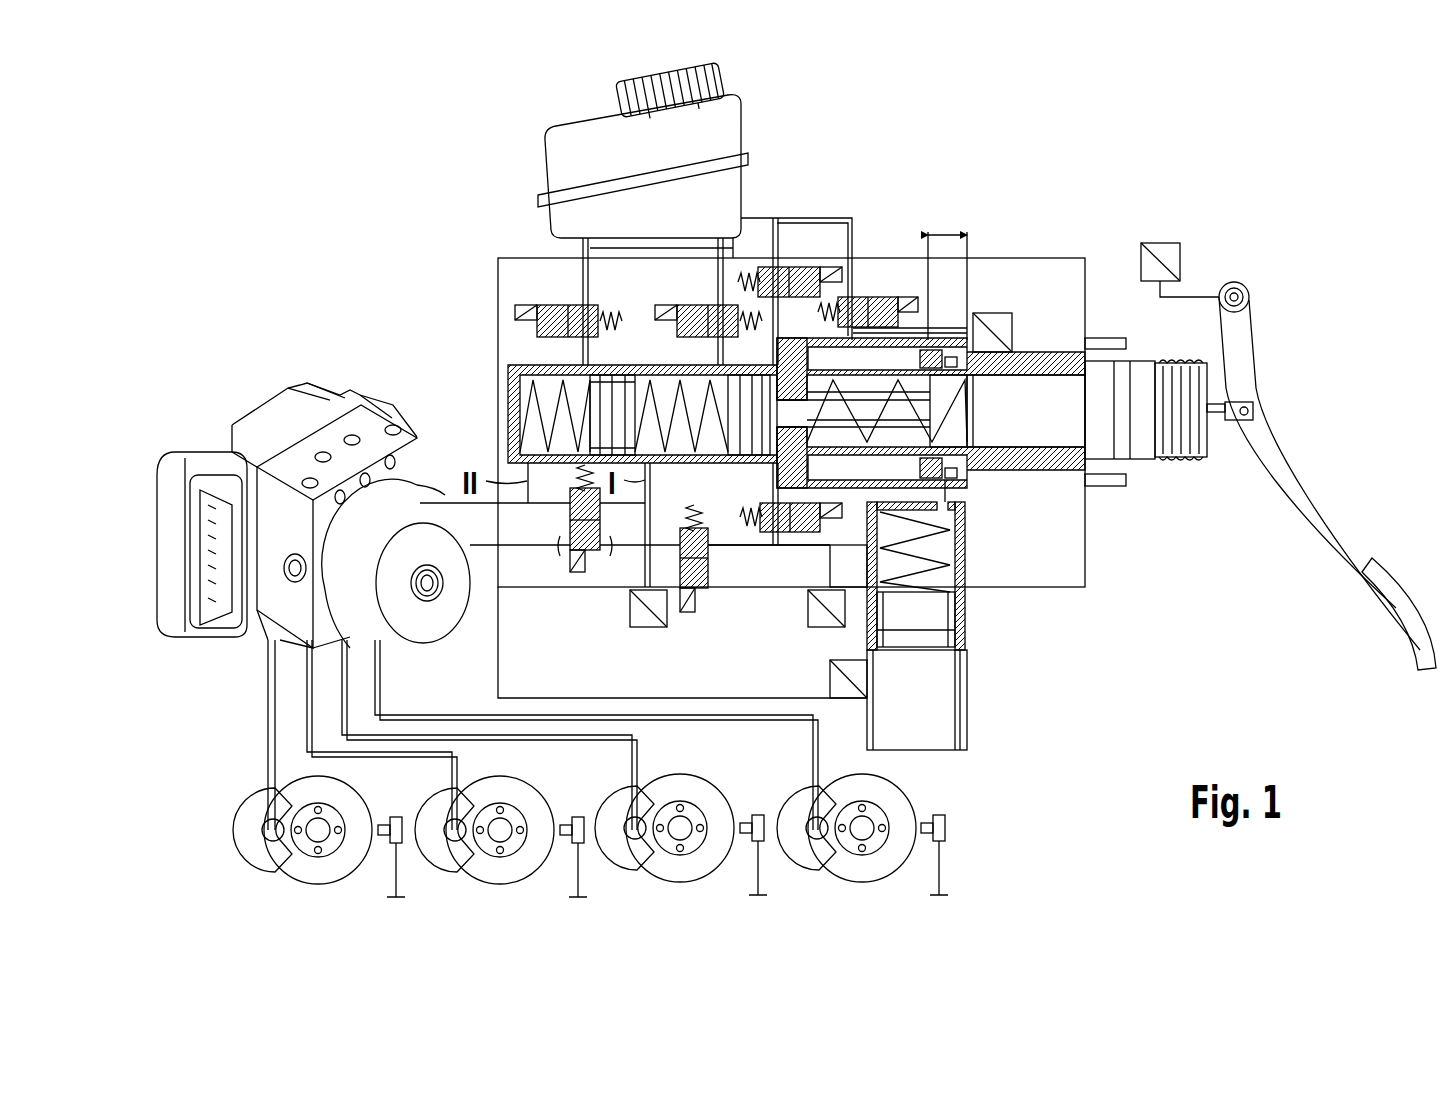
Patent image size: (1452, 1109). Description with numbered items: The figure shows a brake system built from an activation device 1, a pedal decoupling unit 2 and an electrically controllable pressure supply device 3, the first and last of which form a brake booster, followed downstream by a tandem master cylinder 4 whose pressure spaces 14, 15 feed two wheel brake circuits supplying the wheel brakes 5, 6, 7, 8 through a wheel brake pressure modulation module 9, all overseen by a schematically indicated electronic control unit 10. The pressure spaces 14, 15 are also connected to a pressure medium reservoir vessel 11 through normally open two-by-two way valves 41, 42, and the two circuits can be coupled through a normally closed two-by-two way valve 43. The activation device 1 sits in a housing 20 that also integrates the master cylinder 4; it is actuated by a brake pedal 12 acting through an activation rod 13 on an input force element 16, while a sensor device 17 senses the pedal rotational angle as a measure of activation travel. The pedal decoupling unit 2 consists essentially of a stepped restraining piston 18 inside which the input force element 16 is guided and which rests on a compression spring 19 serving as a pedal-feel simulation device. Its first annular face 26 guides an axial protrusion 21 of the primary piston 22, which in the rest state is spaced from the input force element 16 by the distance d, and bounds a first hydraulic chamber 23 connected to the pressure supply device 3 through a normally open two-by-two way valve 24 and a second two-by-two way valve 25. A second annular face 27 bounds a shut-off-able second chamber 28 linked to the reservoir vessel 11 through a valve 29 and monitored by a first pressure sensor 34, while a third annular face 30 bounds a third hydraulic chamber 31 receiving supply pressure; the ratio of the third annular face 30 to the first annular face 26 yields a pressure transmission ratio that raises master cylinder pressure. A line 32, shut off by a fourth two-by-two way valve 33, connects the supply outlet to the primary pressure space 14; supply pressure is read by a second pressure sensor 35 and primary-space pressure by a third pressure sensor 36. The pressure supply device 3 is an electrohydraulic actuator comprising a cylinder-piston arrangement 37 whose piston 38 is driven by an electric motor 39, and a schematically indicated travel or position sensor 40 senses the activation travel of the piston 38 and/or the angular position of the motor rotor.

The activation device 1 is at (1169, 478).
The pedal decoupling unit 2 is at (894, 388).
The electrically controllable pressure supply device 3 is at (982, 626).
The tandem master cylinder 4 is at (603, 414).
The wheel brake 5 is at (275, 853).
The wheel brake 6 is at (457, 853).
The wheel brake 7 is at (637, 848).
The wheel brake 8 is at (818, 848).
The wheel brake pressure modulation module 9 is at (255, 398).
The electronic open-loop and closed-loop control unit 10 is at (497, 680).
The pressure medium reservoir vessel 11 is at (560, 158).
The brake pedal 12 is at (1290, 470).
The activation rod 13 is at (1216, 415).
The primary pressure space 14 is at (676, 385).
The pressure space 15 is at (540, 365).
The input force element 16 is at (1040, 450).
The sensor device 17 is at (1160, 243).
The restraining piston 18 is at (1060, 350).
The compression spring 19 is at (985, 450).
The housing 20 is at (1085, 575).
The axial protrusion 21 is at (935, 410).
The primary piston 22 is at (745, 463).
The first hydraulic chamber 23 is at (790, 355).
The 2/2 way valve 24 is at (798, 268).
The second 2/2 way valve 25 is at (797, 535).
The first annular face 26 is at (775, 465).
The second annular face 27 is at (905, 298).
The second chamber 28 is at (848, 566).
The 2/2 way valve 29 is at (892, 270).
The third annular face 30 is at (962, 450).
The third hydraulic chamber 31 is at (947, 269).
The line 32 is at (738, 548).
The fourth 2/2 way valve 33 is at (703, 600).
The first pressure sensor 34 is at (990, 313).
The second pressure sensor 35 is at (838, 628).
The third pressure sensor 36 is at (630, 605).
The hydraulic cylinder-piston arrangement 37 is at (916, 576).
The piston 38 is at (967, 602).
The electric motor 39 is at (967, 700).
The travel sensor 40 is at (853, 700).
The 2/2 way valve 41 is at (710, 303).
The 2/2 way valve 42 is at (565, 303).
The 2/2 way valve 43 is at (590, 560).